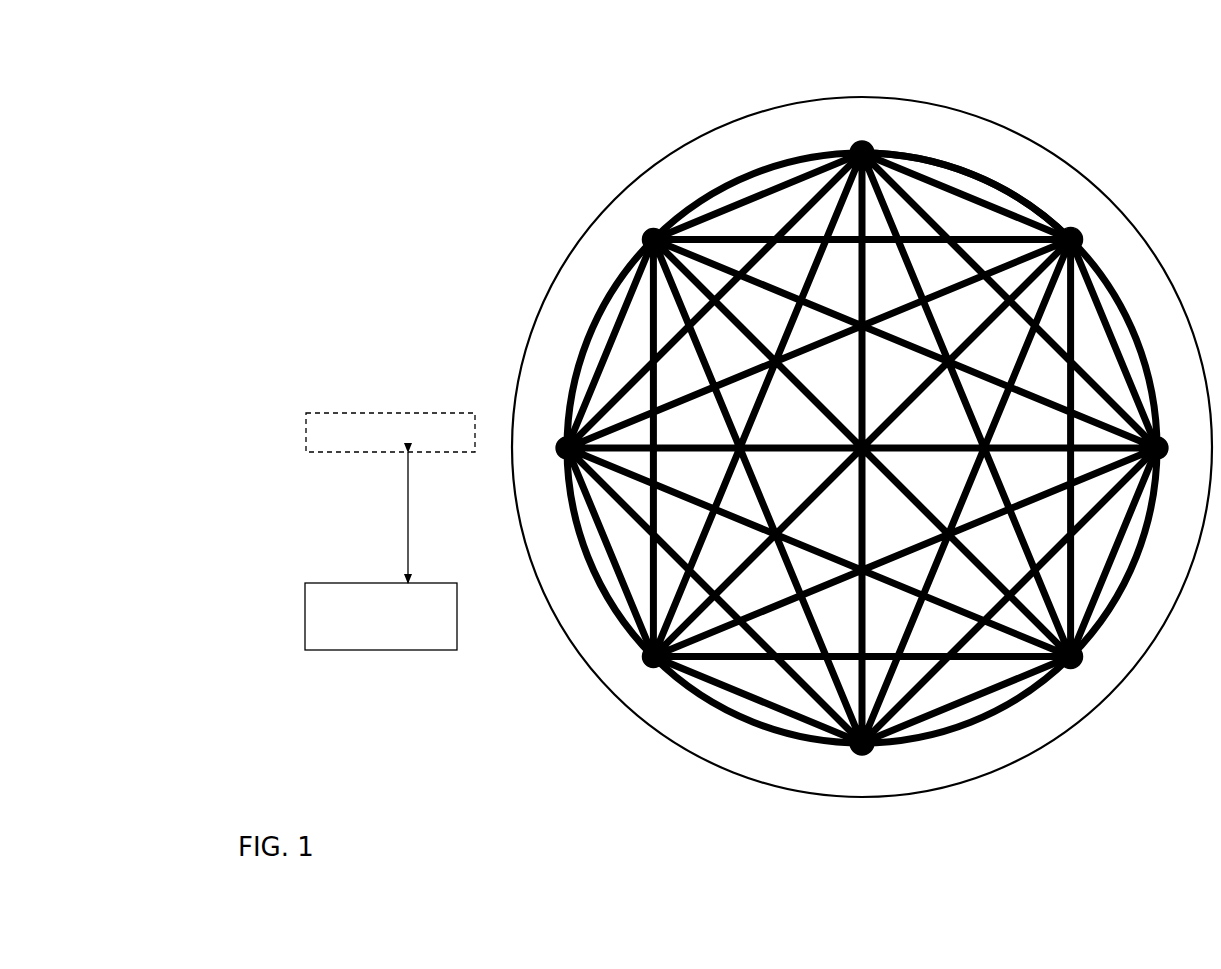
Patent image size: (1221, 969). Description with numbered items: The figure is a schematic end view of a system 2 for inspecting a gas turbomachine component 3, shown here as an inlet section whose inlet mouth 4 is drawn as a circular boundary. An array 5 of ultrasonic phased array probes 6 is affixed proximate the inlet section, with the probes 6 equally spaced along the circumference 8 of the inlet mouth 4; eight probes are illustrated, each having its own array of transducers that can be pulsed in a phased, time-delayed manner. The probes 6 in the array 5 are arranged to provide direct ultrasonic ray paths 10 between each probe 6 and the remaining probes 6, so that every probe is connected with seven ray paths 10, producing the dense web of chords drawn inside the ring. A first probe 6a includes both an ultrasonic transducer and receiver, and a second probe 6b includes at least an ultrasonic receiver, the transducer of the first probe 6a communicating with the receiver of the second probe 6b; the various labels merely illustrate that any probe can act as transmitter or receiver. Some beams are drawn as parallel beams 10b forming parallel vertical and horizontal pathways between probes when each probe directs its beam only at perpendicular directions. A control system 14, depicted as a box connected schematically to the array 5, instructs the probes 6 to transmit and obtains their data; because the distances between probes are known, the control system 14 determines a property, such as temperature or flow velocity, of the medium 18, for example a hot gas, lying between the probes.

The system 2 is at (318, 116).
The gas turbomachine component 3 is at (660, 167).
The inlet mouth 4 is at (586, 344).
The array of ultrasonic phased array probes 5 is at (838, 142).
The ultrasonic phased array probe 6 is at (907, 456).
The first probe 6a is at (644, 232).
The second probe 6b is at (557, 439).
The circumference 8 is at (1018, 188).
The ultrasonic ray path 10 is at (926, 384).
The parallel beam 10b is at (749, 233).
The control system 14 is at (381, 616).
The medium 18 is at (887, 455).